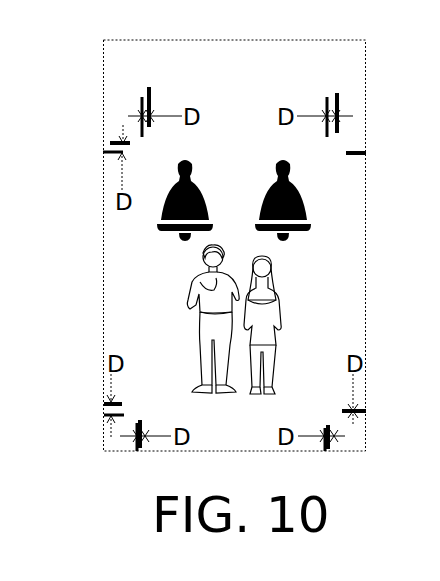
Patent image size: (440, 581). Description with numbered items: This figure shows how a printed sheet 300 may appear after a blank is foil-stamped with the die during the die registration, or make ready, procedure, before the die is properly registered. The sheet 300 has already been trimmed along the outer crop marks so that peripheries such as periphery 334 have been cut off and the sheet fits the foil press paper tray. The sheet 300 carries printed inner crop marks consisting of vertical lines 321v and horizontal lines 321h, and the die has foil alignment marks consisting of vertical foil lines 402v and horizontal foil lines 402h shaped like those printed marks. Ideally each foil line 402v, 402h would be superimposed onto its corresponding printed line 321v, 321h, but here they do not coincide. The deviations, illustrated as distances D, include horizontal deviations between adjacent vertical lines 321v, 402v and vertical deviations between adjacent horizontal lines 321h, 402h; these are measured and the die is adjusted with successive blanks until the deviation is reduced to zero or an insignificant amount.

The periphery 334 is at (253, 26).
The vertical foil line 402v is at (147, 89).
The printed vertical inner mark 321v is at (140, 100).
The horizontal foil line 402h is at (113, 142).
The printed horizontal inner mark 321h is at (107, 152).
The printed sheet 300 is at (173, 286).